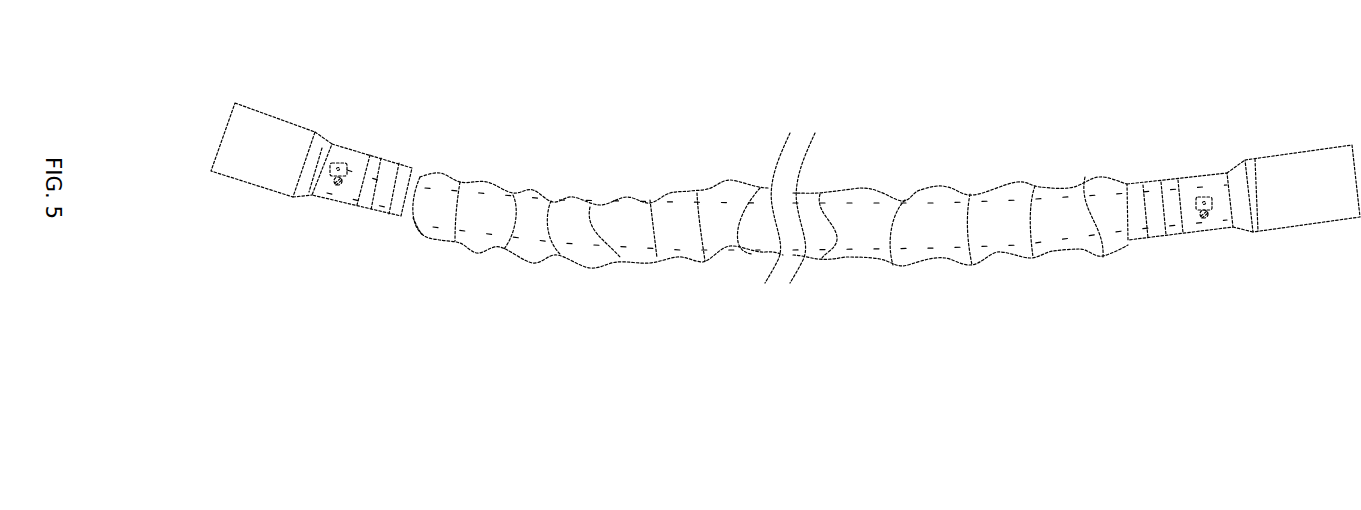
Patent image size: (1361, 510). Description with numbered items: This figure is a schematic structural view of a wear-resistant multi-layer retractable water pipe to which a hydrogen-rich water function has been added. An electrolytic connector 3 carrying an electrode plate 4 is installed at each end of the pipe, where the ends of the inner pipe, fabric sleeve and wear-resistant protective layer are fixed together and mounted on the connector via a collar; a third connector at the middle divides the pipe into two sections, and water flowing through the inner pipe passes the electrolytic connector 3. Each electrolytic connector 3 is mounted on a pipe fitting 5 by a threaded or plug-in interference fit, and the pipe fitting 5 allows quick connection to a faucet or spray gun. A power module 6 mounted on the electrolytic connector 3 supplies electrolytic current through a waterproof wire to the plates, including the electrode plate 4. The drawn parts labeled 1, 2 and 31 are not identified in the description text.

The flexible tube 1 is at (585, 197).
The inner core 2 is at (673, 245).
The electrolytic connector 3 is at (383, 162).
The fastening screw 31 is at (335, 183).
The electrode plate 4 is at (363, 207).
The pipe fitting 5 is at (265, 158).
The power module 6 is at (337, 163).